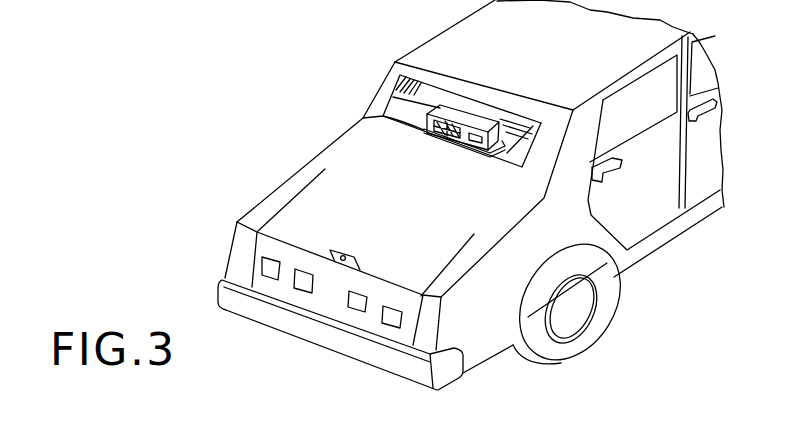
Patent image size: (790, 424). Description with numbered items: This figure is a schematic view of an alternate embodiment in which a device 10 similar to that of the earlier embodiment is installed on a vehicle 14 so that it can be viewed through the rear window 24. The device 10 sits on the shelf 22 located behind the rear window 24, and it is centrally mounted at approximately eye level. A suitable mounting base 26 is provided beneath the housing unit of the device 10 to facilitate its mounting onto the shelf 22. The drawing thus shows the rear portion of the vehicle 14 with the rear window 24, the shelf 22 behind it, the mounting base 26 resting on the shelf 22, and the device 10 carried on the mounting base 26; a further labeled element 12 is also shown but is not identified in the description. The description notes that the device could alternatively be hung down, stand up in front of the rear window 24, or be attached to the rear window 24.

The device 10 is at (470, 111).
The vehicle 12 is at (339, 160).
The vehicle 14 is at (431, 35).
The shelf 22 is at (513, 158).
The rear window 24 is at (521, 121).
The mounting base 26 is at (425, 130).